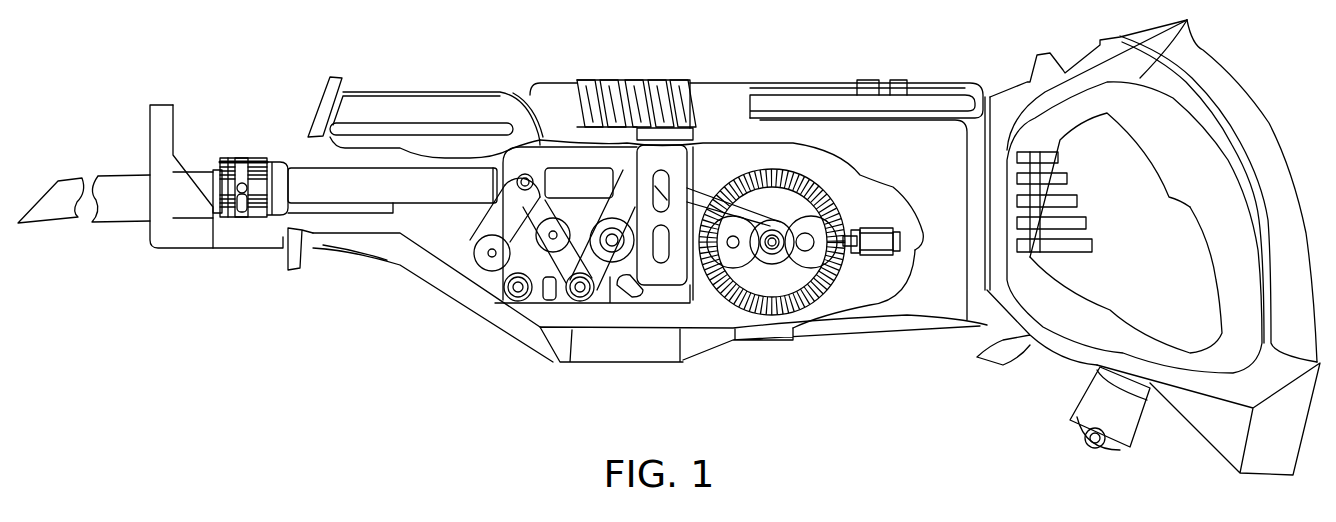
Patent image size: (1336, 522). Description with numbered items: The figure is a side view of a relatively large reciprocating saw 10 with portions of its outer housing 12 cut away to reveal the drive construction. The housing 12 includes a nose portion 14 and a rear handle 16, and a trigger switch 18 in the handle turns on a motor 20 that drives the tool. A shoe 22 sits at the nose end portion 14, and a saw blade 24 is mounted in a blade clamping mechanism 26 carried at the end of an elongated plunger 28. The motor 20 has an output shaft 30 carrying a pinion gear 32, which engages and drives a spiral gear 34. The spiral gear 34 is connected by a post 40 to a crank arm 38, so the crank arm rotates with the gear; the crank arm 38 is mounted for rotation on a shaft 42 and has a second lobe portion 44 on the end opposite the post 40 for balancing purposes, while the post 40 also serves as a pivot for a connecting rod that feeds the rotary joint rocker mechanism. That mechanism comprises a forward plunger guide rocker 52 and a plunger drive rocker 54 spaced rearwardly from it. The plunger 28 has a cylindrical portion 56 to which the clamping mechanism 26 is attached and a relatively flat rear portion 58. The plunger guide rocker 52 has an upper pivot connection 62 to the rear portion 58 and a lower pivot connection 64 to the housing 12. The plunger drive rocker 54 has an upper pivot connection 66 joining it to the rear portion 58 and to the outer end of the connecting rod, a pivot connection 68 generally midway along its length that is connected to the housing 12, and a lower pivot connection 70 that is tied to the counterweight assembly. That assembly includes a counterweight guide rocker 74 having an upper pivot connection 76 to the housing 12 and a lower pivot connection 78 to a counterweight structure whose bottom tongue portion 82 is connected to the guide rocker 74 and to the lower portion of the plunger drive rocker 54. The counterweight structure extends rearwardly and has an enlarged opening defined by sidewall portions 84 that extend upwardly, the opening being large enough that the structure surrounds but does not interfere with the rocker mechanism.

The reciprocating saw 10 is at (871, 372).
The outer housing 12 is at (723, 83).
The nose portion 14 is at (325, 102).
The rear handle 16 is at (1228, 100).
The trigger switch 18 is at (1153, 187).
The motor 20 is at (912, 255).
The shoe 22 is at (177, 228).
The saw blade 24 is at (132, 205).
The blade clamping mechanism 26 is at (232, 158).
The elongated plunger 28 is at (407, 215).
The output shaft 30 is at (875, 245).
The pinion gear 32 is at (840, 232).
The spiral gear 34 is at (750, 310).
The crank arm 38 is at (815, 228).
The post 40 is at (808, 252).
The shaft 42 is at (773, 250).
The second lobe portion 44 is at (720, 247).
The plunger guide rocker 52 is at (497, 222).
The plunger drive rocker 54 is at (618, 197).
The cylindrical portion 56 is at (320, 185).
The rear portion 58 is at (565, 160).
The upper pivot connection 62 is at (525, 180).
The lower pivot connection 64 is at (482, 262).
The upper pivot connection 66 is at (615, 178).
The pivot connection 68 is at (613, 250).
The lower pivot connection 70 is at (580, 292).
The counterweight guide rocker 74 is at (495, 290).
The upper pivot connection 76 is at (505, 228).
The lower pivot connection 78 is at (533, 305).
The bottom tongue portion 82 is at (549, 300).
The sidewall portions 84 is at (667, 158).